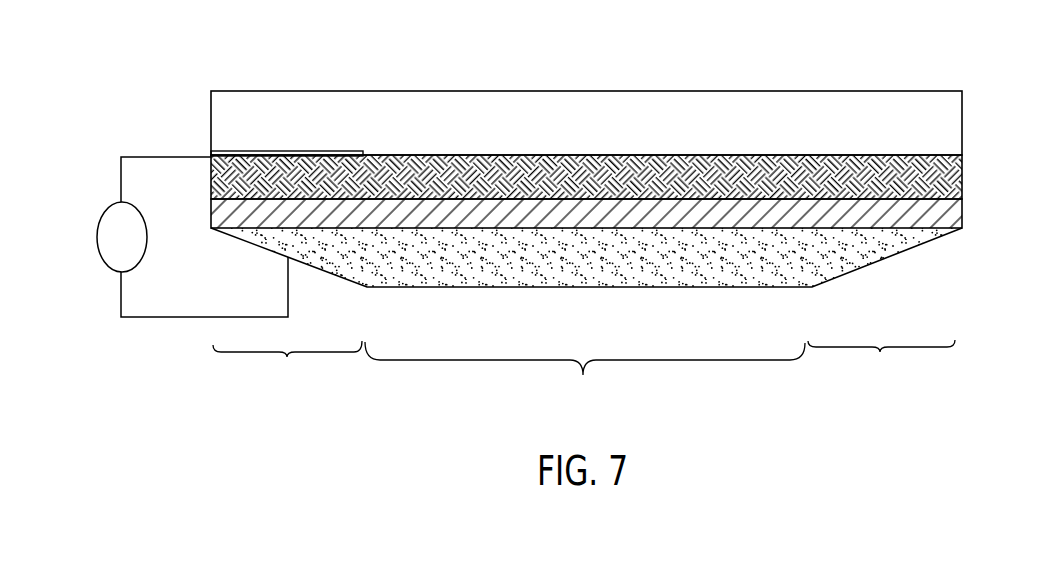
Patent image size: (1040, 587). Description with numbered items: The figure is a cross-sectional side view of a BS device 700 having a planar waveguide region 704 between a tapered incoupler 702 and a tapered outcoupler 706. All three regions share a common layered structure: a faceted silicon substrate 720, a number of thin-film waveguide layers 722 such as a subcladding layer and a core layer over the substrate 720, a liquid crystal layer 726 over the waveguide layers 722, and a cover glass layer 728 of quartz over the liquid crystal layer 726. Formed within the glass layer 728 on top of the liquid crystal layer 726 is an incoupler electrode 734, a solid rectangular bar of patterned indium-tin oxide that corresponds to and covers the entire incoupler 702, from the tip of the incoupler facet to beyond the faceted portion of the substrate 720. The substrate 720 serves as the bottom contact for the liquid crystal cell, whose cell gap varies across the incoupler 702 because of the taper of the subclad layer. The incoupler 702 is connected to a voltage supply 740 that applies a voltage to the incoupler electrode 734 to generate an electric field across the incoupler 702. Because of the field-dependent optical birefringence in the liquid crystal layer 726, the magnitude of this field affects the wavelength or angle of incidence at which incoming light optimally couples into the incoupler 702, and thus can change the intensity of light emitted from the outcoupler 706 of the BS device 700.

The BS device 700 is at (702, 79).
The tapered incoupler 702 is at (287, 366).
The planar waveguide region 704 is at (585, 378).
The tapered outcoupler 706 is at (881, 365).
The substrate 720 is at (875, 252).
The thin-film waveguide layers 722 is at (943, 217).
The liquid crystal layer 726 is at (943, 181).
The cover glass layer 728 is at (943, 132).
The incoupler electrode 734 is at (287, 150).
The voltage supply 740 is at (110, 220).